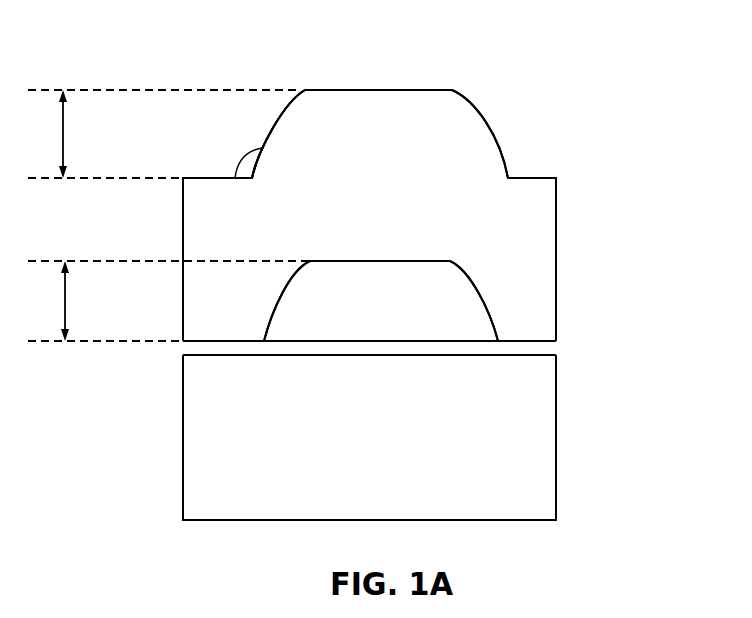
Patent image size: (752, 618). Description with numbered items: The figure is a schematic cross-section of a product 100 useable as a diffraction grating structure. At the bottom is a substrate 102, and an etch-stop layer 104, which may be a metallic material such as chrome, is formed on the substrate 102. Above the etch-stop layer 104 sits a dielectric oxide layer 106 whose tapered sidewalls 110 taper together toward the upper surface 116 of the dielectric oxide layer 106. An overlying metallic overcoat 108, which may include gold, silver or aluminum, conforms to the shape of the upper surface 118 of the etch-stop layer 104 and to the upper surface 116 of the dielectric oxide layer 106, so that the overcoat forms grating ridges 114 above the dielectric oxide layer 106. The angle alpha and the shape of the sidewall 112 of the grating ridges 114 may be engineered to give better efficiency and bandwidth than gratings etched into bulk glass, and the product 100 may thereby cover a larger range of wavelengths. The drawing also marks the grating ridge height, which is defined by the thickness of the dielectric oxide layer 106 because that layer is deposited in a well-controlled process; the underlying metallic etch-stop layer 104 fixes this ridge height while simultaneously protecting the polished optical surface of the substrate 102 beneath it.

The product 100 is at (226, 50).
The substrate 102 is at (394, 467).
The etch-stop layer 104 is at (550, 347).
The dielectric oxide layer 106 is at (394, 321).
The metallic overcoat 108 is at (394, 204).
The tapered sidewalls 110 is at (277, 302).
The sidewall 112 is at (266, 133).
The grating ridges 114 is at (481, 93).
The upper surface of the dielectric oxide layer 116 is at (390, 256).
The upper surface of the etch-stop layer 118 is at (530, 337).